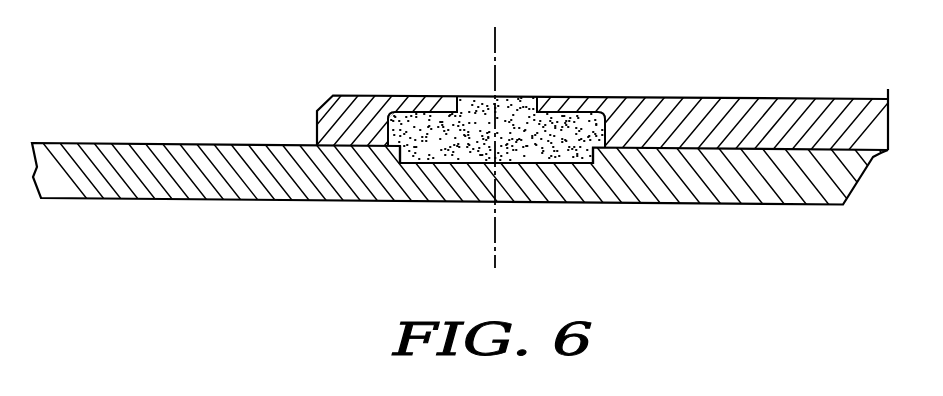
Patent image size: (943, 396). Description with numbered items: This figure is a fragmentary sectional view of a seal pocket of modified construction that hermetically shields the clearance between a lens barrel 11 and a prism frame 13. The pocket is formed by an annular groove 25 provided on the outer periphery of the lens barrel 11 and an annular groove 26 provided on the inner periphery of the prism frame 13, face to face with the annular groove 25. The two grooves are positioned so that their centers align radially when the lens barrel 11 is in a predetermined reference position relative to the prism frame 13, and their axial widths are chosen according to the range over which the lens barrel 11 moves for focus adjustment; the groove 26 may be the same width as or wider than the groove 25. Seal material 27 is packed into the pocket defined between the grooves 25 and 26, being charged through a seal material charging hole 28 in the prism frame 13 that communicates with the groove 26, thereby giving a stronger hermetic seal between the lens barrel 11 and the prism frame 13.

The lens barrel 11 is at (148, 168).
The prism frame 13 is at (700, 118).
The annular groove 25 is at (575, 150).
The annular groove 26 is at (437, 110).
The seal material 27 is at (437, 165).
The seal material charging hole 28 is at (518, 108).